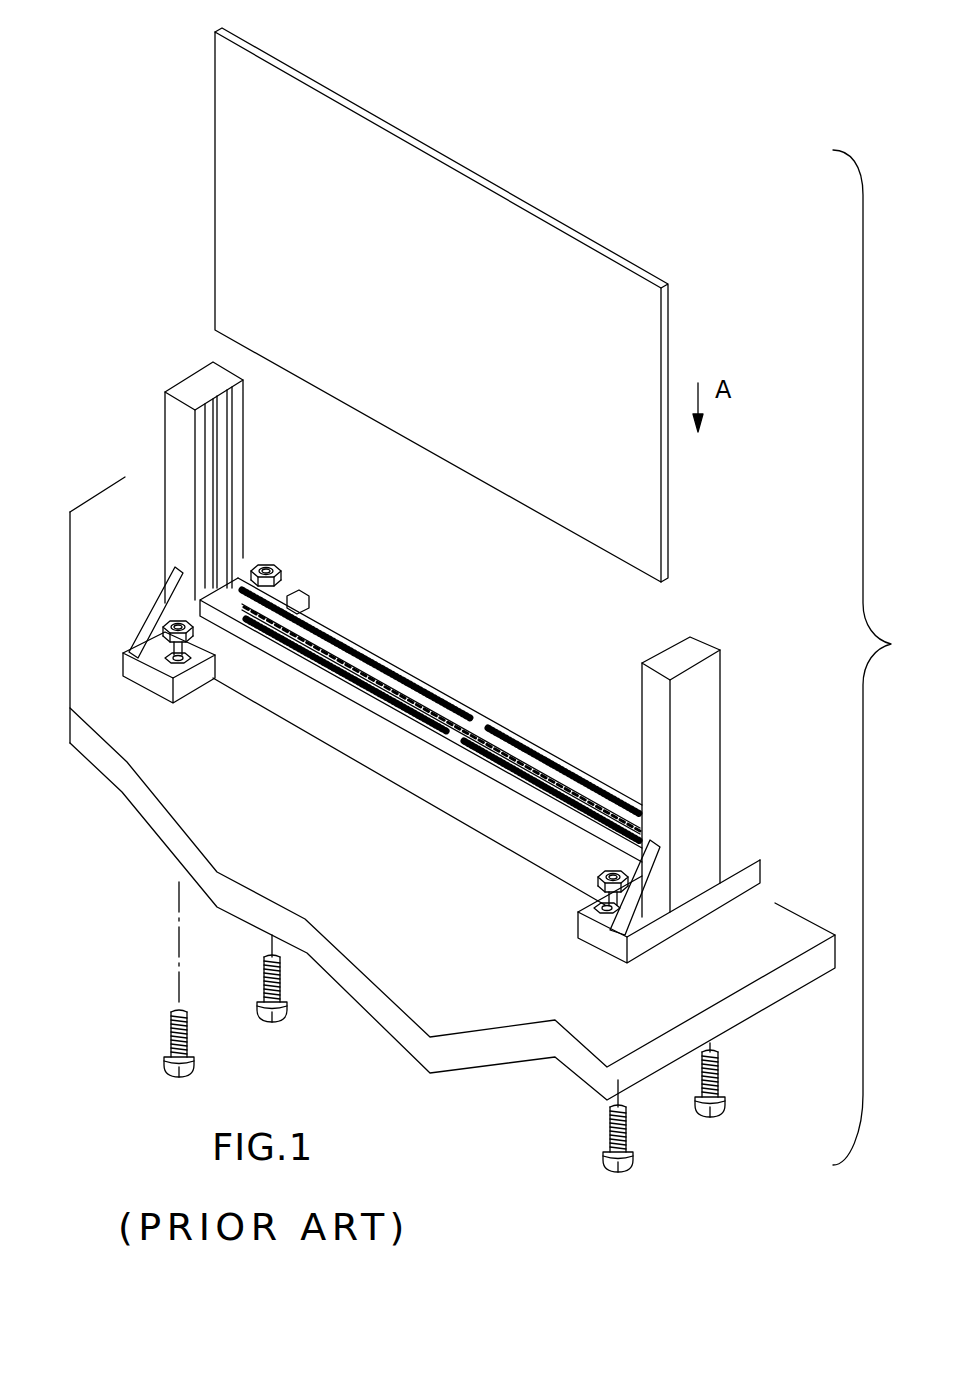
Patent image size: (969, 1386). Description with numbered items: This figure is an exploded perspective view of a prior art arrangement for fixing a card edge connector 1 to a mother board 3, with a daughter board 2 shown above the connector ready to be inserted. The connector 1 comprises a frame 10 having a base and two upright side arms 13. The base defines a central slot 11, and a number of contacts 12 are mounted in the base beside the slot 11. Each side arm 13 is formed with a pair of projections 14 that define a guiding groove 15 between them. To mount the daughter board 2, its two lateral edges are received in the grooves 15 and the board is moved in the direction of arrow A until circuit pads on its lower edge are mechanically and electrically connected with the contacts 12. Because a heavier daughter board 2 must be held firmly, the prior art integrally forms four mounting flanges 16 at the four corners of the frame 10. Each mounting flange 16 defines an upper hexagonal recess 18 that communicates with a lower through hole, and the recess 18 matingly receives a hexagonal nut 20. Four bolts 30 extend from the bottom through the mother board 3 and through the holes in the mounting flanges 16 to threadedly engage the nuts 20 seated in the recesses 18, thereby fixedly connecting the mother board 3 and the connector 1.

The card edge connector 1 is at (171, 348).
The daughter board 2 is at (472, 197).
The mother board 3 is at (175, 765).
The frame 10 is at (421, 737).
The central slot 11 is at (367, 670).
The contacts 12 is at (420, 718).
The side arm 13 is at (487, 639).
The projections 14 is at (216, 417).
The guiding groove 15 is at (222, 443).
The mounting flange 16 is at (153, 662).
The hexagonal recess 18 is at (192, 664).
The hexagonal nut 20 is at (175, 615).
The bolts 30 is at (263, 1020).